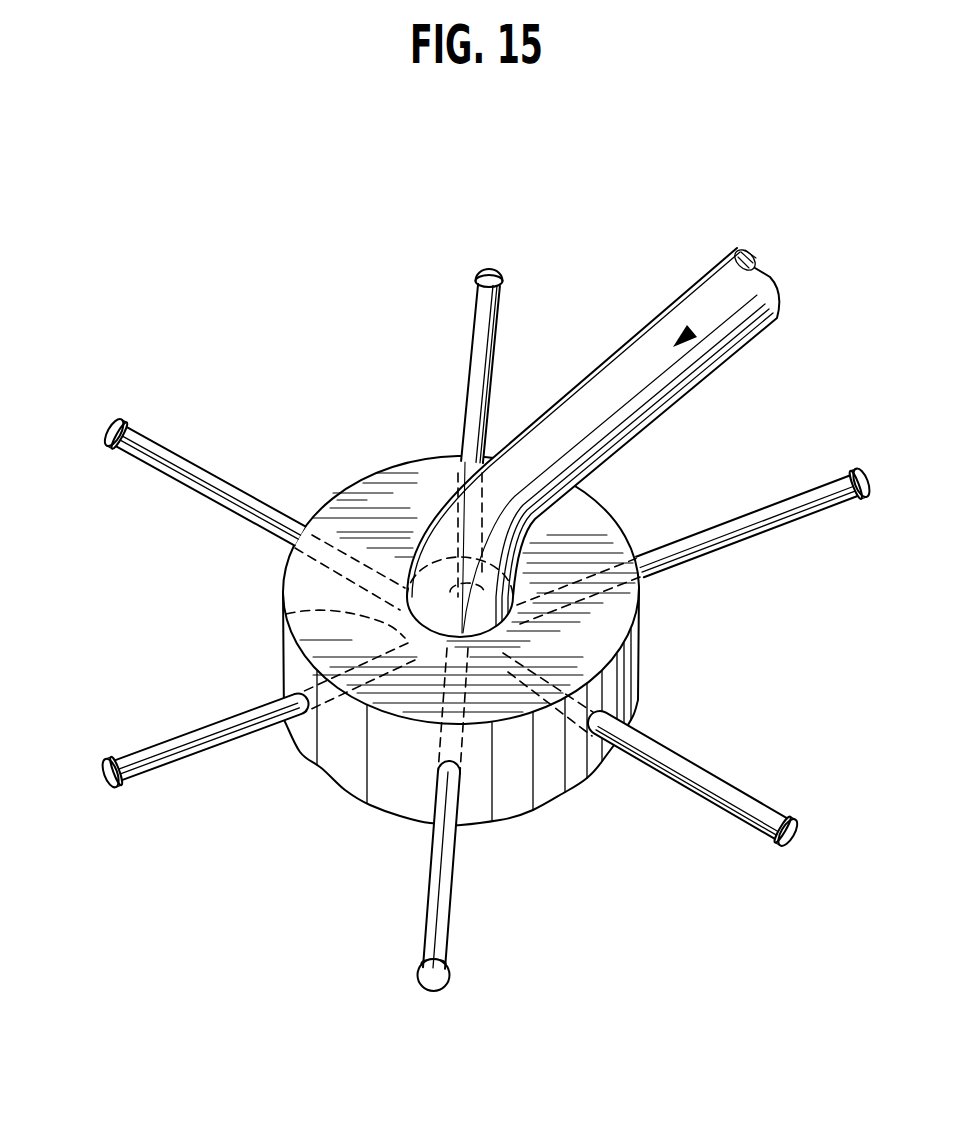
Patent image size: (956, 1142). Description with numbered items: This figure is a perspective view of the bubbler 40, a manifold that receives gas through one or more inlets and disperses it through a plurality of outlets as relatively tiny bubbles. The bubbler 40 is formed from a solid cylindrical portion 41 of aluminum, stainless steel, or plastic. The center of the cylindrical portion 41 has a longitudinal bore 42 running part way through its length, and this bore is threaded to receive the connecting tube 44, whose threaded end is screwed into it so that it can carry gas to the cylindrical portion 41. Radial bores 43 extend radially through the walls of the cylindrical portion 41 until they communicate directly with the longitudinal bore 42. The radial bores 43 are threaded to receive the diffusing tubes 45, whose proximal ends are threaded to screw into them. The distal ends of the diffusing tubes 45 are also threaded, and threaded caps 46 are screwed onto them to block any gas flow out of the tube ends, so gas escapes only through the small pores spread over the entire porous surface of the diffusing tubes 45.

The bubbler 40 is at (228, 312).
The cylindrical portion 41 is at (355, 790).
The longitudinal bore 42 is at (287, 618).
The radial bores 43 is at (335, 553).
The connecting tube 44 is at (622, 367).
The diffusing tubes 45 is at (490, 368).
The threaded caps 46 is at (478, 273).